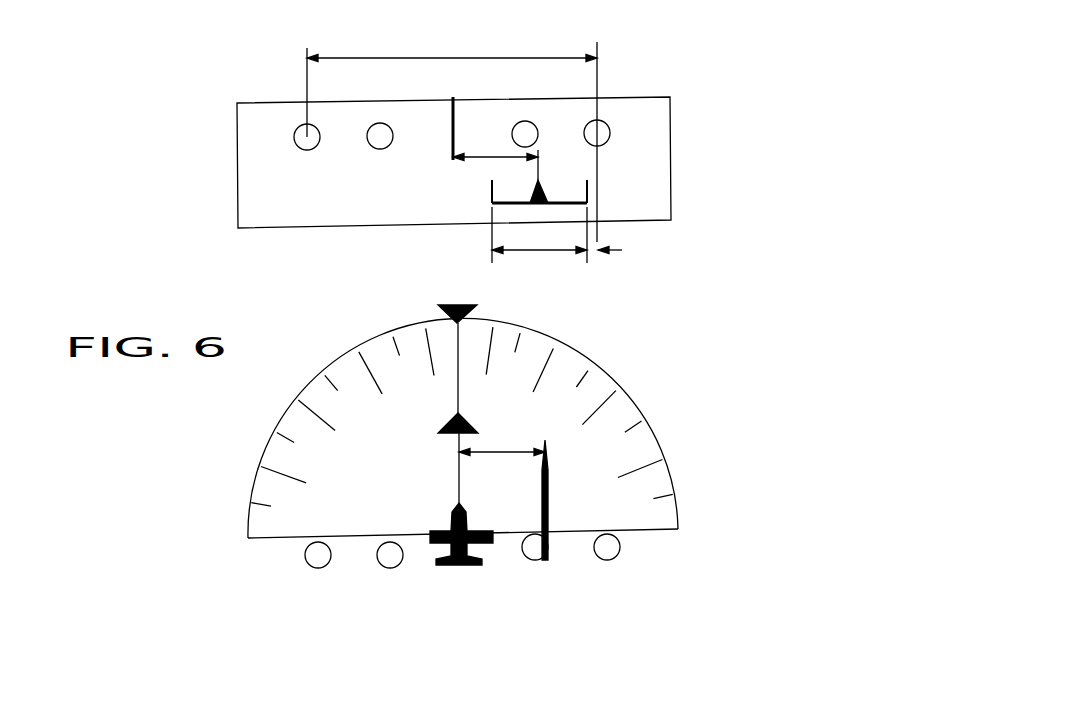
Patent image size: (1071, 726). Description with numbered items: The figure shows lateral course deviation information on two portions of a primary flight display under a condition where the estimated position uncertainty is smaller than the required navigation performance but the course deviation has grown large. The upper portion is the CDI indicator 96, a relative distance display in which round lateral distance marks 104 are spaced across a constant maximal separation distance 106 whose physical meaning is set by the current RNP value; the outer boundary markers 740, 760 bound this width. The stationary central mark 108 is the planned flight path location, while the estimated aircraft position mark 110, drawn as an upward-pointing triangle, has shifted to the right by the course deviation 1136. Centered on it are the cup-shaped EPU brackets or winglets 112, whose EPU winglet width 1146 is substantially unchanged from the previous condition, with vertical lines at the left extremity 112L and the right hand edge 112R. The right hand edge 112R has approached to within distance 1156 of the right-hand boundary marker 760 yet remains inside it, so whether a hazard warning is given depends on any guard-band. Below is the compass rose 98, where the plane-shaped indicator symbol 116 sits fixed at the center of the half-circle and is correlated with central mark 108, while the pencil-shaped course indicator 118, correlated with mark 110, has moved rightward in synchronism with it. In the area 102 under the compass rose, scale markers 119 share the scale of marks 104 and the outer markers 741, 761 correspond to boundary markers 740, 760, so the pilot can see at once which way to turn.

The CDI indicator 96 is at (238, 174).
The compass rose 98 is at (283, 409).
The area below compass rose 102 is at (407, 583).
The lateral distance marks 104 is at (617, 133).
The maximal separation distance 106 is at (420, 58).
The central mark 108 is at (452, 132).
The estimated aircraft position mark 110 is at (530, 187).
The EPU brackets or winglets 112 is at (588, 187).
The left extremity of EPU winglet 112L is at (492, 188).
The right hand edge of EPU winglet 112R is at (587, 195).
The plane-shaped indicator symbol 116 is at (443, 531).
The course indicator 118 is at (550, 507).
The scale markers 119 is at (627, 543).
The left outer boundary marker 740 is at (307, 90).
The left outer marker 741 is at (303, 542).
The right outer boundary marker 760 is at (598, 82).
The right outer marker 761 is at (619, 541).
The course deviation 1136 is at (490, 157).
The EPU winglet width 1146 is at (535, 252).
The distance to RNP boundary 1156 is at (603, 238).